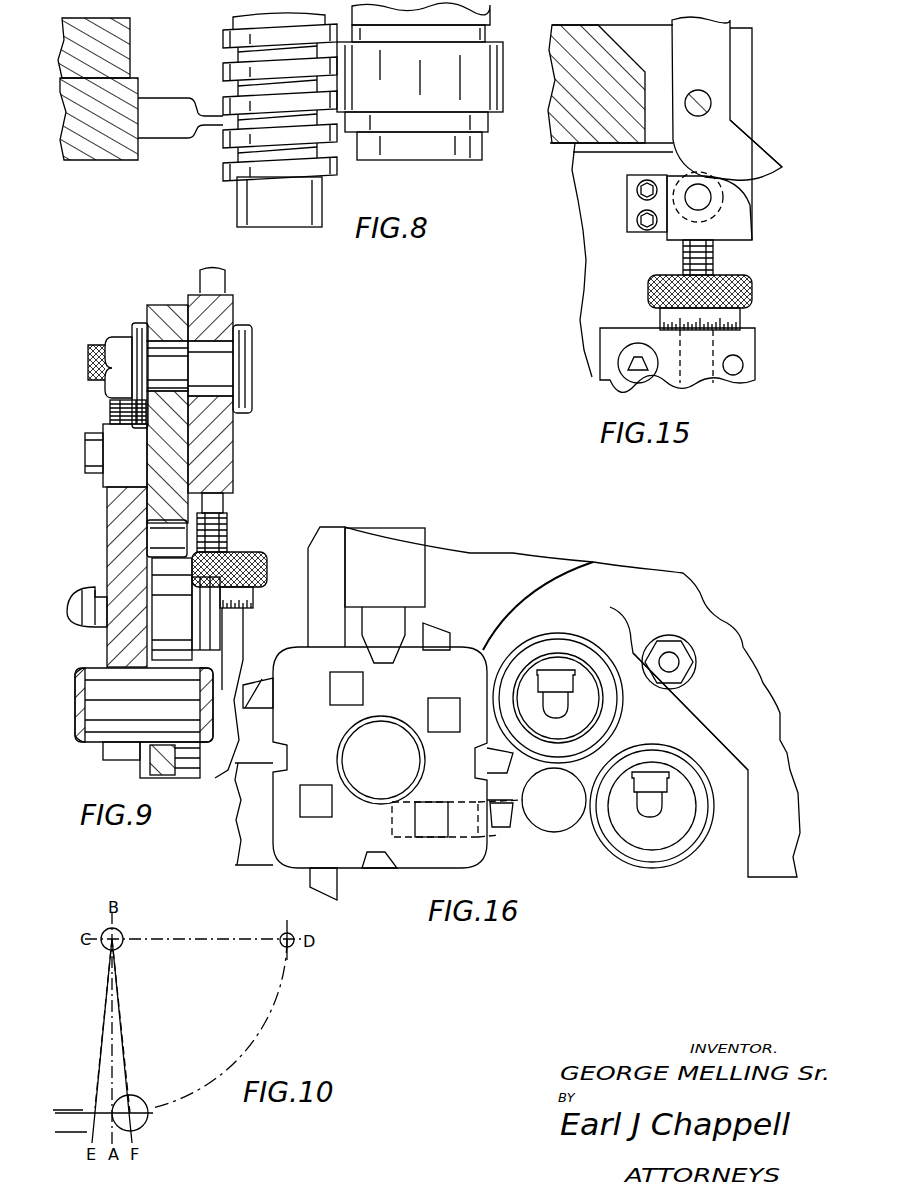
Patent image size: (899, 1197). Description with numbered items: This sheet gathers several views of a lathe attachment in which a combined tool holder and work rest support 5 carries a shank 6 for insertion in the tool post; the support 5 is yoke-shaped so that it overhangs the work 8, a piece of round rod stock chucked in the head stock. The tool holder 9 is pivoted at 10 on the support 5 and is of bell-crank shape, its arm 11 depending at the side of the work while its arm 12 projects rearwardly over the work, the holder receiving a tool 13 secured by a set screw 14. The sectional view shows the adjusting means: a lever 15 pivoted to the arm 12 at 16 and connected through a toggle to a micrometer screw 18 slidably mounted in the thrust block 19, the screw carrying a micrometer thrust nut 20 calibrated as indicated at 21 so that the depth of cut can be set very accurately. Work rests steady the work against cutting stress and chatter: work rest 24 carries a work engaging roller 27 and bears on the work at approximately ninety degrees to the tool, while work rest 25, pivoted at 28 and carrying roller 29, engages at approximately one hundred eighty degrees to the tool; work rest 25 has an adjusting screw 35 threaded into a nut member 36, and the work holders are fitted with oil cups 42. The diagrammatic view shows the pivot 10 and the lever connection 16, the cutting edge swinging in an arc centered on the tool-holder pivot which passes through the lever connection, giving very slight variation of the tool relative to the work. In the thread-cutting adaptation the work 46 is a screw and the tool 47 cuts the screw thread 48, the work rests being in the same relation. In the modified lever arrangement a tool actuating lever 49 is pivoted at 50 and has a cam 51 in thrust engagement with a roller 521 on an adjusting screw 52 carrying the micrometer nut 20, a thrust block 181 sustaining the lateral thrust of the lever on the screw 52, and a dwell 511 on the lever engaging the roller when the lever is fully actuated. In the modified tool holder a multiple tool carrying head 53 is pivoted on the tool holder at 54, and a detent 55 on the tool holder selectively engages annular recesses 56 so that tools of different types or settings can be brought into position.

In FIG. 8, the combined tool holder and work rest support 5 is at (118, 48).
In FIG. 15, the combined tool holder and work rest support 5 is at (578, 207).
In FIG. 16, the combined tool holder and work rest support 5 is at (328, 547).
In FIG. 16, the shank 6 is at (256, 857).
In FIG. 9, the work 8 is at (73, 742).
In FIG. 10, the work 8 is at (148, 1125).
In FIG. 9, the tool holder 9 is at (222, 463).
In FIG. 16, the tool holder 9 is at (507, 572).
In FIG. 9, the pivot 10 is at (253, 347).
In FIG. 10, the pivot 10 is at (118, 932).
In FIG. 8, the arm 11 is at (82, 160).
In FIG. 15, the arm 12 is at (578, 140).
In FIG. 16, the tool 13 is at (502, 823).
In FIG. 10, the tool 13 is at (58, 1130).
In FIG. 16, the set screw 14 is at (427, 813).
In FIG. 9, the lever 15 is at (222, 278).
In FIG. 10, the pivot 16 is at (280, 946).
In FIG. 9, the micrometer screw 18 is at (225, 513).
In FIG. 15, the thrust block 19 is at (748, 367).
In FIG. 9, the thrust block 19 is at (233, 648).
In FIG. 15, the micrometer thrust nut 20 is at (752, 292).
In FIG. 9, the micrometer thrust nut 20 is at (243, 557).
In FIG. 15, the calibration 21 is at (748, 320).
In FIG. 9, the calibration 21 is at (253, 598).
In FIG. 9, the work rest 24 is at (117, 520).
In FIG. 16, the work rest 24 is at (578, 626).
In FIG. 8, the work rest 25 is at (480, 13).
In FIG. 16, the work rest 25 is at (733, 808).
In FIG. 9, the work engaging roller 27 is at (162, 582).
In FIG. 16, the work engaging roller 27 is at (597, 660).
In FIG. 16, the pivot 28 is at (690, 650).
In FIG. 8, the work engaging roller 29 is at (490, 110).
In FIG. 9, the work engaging roller 29 is at (147, 762).
In FIG. 16, the work engaging roller 29 is at (647, 864).
In FIG. 9, the adjusting screw 35 is at (110, 407).
In FIG. 9, the nut member 36 is at (108, 467).
In FIG. 16, the oil cup 42 is at (643, 810).
In FIG. 8, the work 46 is at (240, 200).
In FIG. 8, the tool 47 is at (200, 118).
In FIG. 8, the screw thread 48 is at (235, 152).
In FIG. 15, the tool actuating lever 49 is at (723, 77).
In FIG. 15, the pivot 50 is at (712, 104).
In FIG. 15, the cam 51 is at (765, 178).
In FIG. 15, the adjusting screw 52 is at (718, 254).
In FIG. 16, the multiple tool carrying head 53 is at (417, 860).
In FIG. 16, the pivot 54 is at (370, 788).
In FIG. 16, the detent 55 is at (387, 653).
In FIG. 16, the annular recesses 56 is at (383, 623).
In FIG. 15, the thrust block 181 is at (633, 231).
In FIG. 15, the dwell 511 is at (780, 170).
In FIG. 15, the roller 521 is at (722, 212).